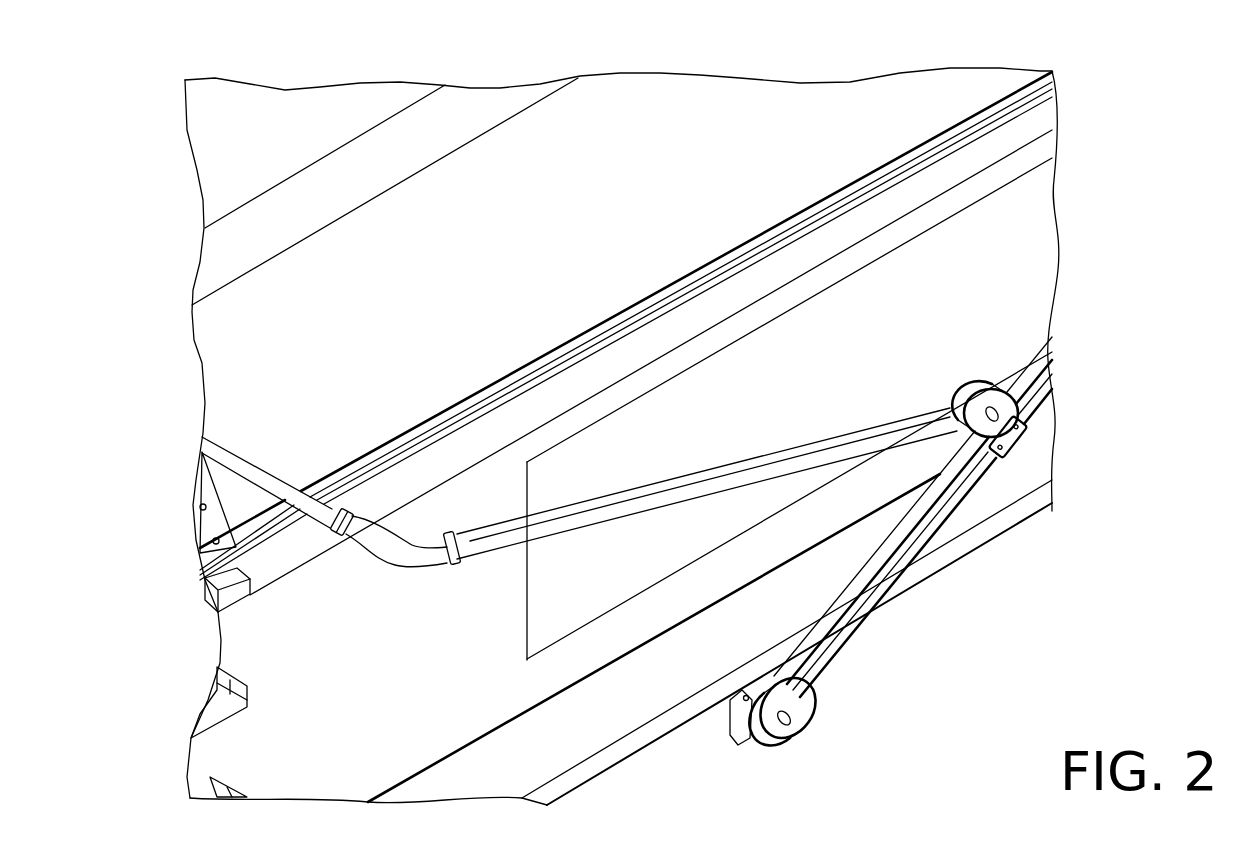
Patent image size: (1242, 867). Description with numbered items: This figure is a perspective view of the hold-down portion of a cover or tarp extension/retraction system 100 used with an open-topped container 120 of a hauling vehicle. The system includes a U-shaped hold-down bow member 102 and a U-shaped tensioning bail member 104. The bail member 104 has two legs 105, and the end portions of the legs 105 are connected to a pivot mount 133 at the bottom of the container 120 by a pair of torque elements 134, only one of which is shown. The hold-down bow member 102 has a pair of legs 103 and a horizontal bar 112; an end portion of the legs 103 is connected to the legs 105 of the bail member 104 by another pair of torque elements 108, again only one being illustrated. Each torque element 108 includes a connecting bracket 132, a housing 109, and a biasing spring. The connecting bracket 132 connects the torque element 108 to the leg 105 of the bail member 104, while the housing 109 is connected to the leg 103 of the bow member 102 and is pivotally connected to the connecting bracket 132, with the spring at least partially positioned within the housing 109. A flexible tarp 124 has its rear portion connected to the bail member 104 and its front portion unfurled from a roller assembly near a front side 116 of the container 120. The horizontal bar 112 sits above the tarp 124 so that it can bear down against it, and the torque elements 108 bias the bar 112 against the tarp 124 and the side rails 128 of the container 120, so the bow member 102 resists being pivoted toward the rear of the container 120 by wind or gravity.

The tarp extension/retraction system 100 is at (788, 545).
The hold-down bow member 102 is at (706, 470).
The legs 103 is at (806, 440).
The tensioning bail member 104 is at (858, 632).
The legs 105 is at (923, 530).
The torque elements 108 is at (975, 385).
The housing 109 is at (1020, 372).
The horizontal bar 112 is at (242, 457).
The front side 116 is at (225, 767).
The open-topped container 120 is at (592, 782).
The tarp 124 is at (862, 108).
The side rails 128 is at (493, 410).
The connecting bracket 132 is at (1022, 452).
The pivot mount 133 is at (736, 732).
The torque elements 134 is at (808, 732).